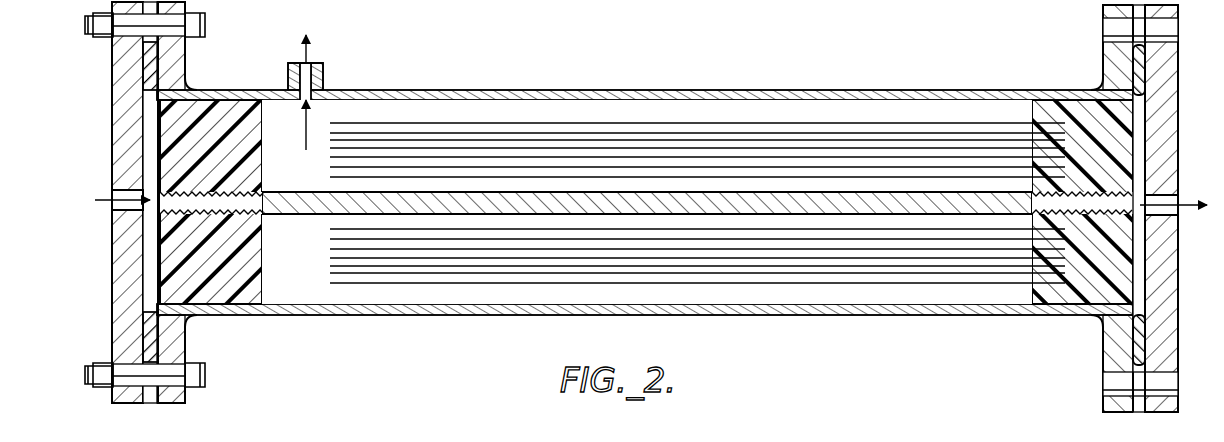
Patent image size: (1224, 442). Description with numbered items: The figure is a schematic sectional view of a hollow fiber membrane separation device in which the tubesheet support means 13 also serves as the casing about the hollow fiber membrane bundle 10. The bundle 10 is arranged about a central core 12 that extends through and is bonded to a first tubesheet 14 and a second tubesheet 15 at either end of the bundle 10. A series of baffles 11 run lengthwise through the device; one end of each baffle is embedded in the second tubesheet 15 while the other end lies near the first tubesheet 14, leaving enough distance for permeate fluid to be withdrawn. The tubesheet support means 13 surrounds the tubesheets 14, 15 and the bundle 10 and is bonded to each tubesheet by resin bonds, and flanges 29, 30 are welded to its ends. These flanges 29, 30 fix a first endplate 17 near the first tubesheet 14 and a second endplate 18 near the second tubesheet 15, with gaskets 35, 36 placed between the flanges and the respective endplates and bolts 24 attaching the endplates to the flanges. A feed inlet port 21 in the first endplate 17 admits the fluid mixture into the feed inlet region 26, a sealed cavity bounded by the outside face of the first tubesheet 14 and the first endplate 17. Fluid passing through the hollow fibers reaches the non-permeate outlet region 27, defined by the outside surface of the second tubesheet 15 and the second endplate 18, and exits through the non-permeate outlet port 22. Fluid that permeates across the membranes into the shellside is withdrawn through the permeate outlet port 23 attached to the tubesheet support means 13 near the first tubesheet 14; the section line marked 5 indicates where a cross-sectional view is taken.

The section line 5- 5 is at (522, 90).
The hollow fiber membrane bundle 10 is at (292, 184).
The baffles 11 is at (828, 135).
The core 12 is at (162, 206).
The tubesheet support means 13 is at (590, 90).
The first tubesheet 14 is at (170, 152).
The second tubesheet 15 is at (1160, 152).
The first endplate 17 is at (118, 130).
The second endplate 18 is at (1168, 120).
The feed inlet port 21 is at (114, 192).
The non-permeate outlet port 22 is at (1168, 200).
The permeate outlet port 23 is at (325, 80).
The bolts 24 is at (206, 24).
The feed inlet region 26 is at (148, 257).
The non-permeate outlet region 27 is at (1140, 226).
The flange 29 is at (182, 58).
The flange 30 is at (1106, 14).
The gasket 35 is at (145, 62).
The gasket 36 is at (1142, 72).